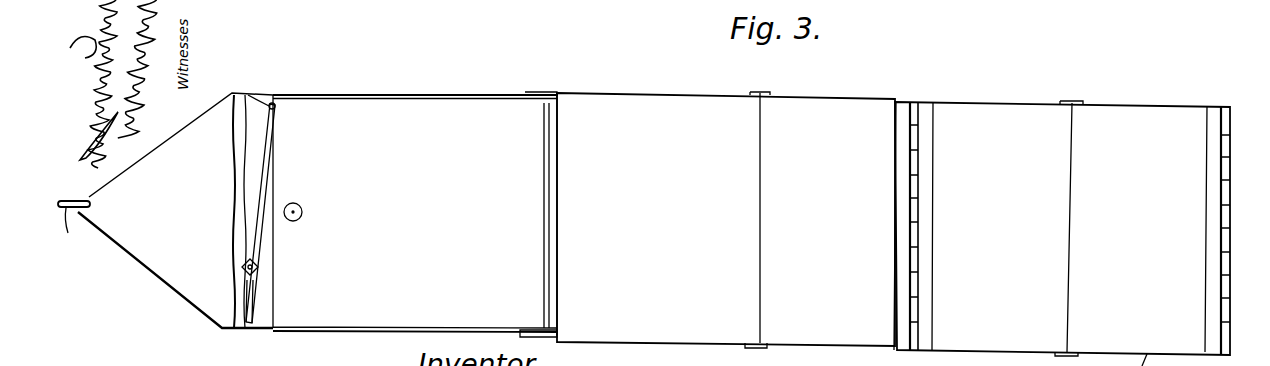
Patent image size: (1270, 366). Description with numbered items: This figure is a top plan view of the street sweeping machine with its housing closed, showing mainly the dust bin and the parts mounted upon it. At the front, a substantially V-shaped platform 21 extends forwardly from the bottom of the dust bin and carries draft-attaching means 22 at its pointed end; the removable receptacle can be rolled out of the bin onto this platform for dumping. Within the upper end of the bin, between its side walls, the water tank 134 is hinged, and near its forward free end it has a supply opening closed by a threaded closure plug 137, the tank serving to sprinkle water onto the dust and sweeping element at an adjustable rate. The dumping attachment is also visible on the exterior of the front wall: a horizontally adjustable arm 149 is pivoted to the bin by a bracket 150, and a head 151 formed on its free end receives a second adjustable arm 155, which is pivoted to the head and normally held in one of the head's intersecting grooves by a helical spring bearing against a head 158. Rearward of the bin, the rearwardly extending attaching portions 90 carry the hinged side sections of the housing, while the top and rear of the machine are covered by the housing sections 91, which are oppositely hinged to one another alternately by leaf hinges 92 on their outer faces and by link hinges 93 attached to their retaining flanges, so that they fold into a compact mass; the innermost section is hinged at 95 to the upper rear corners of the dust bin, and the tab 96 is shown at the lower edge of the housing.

The V-shaped platform 21 is at (175, 210).
The draft-attaching means 22 is at (74, 230).
The rearwardly extending attaching portions 90 is at (545, 95).
The sections of the housing portion 91 is at (945, 228).
The leaf hinges 92 is at (913, 252).
The link hinges 93 is at (762, 95).
The hinge 95 is at (562, 189).
The bottom tab 96 is at (762, 348).
The water tank 134 is at (415, 214).
The threaded closure plug 137 is at (302, 212).
The horizontally adjustable arm 149 is at (262, 186).
The bracket 150 is at (270, 96).
The head 151 is at (246, 268).
The second adjustable arm 155 is at (253, 296).
The head 158 is at (258, 267).